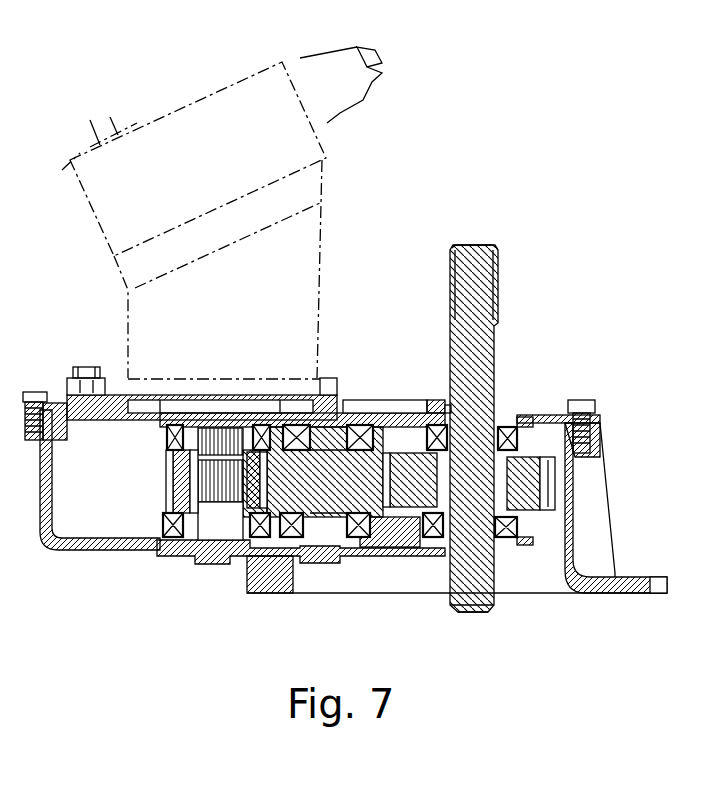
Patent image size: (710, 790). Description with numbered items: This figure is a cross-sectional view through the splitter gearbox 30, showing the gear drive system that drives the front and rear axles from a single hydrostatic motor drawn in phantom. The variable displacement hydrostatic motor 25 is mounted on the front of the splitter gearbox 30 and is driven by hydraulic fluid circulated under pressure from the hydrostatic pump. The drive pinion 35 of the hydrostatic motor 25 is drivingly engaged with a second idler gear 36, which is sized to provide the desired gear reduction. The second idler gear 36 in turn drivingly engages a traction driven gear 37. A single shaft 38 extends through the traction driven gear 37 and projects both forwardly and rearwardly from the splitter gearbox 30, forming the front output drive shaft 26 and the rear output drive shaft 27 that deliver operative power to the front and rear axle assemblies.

The variable displacement hydrostatic motor 25 is at (330, 127).
The front output drive shaft 26 is at (497, 252).
The rear output drive shaft 27 is at (488, 604).
The splitter gearbox 30 is at (128, 548).
The drive pinion 35 is at (167, 492).
The second idler gear 36 is at (378, 497).
The traction driven gear 37 is at (548, 490).
The single shaft 38 is at (529, 437).